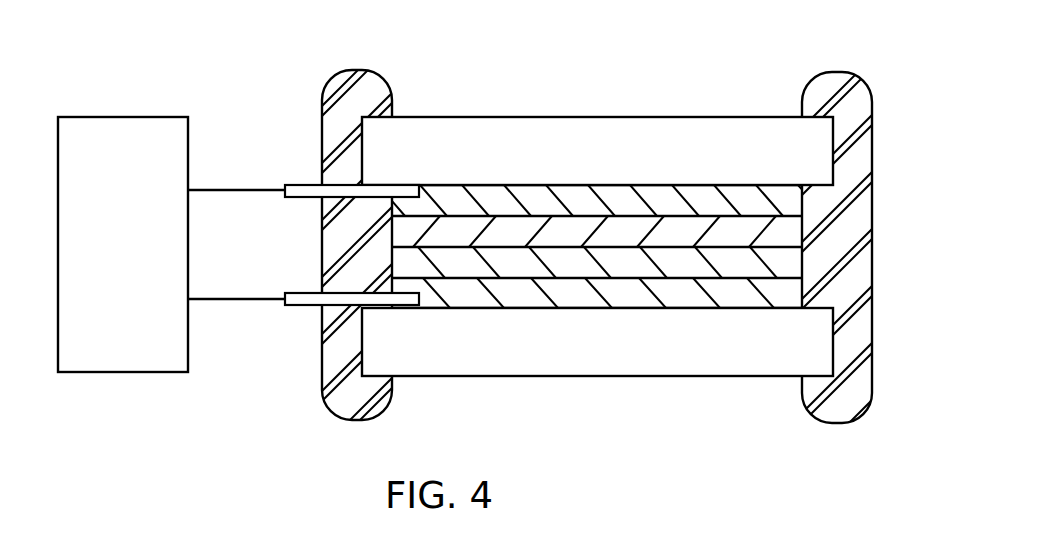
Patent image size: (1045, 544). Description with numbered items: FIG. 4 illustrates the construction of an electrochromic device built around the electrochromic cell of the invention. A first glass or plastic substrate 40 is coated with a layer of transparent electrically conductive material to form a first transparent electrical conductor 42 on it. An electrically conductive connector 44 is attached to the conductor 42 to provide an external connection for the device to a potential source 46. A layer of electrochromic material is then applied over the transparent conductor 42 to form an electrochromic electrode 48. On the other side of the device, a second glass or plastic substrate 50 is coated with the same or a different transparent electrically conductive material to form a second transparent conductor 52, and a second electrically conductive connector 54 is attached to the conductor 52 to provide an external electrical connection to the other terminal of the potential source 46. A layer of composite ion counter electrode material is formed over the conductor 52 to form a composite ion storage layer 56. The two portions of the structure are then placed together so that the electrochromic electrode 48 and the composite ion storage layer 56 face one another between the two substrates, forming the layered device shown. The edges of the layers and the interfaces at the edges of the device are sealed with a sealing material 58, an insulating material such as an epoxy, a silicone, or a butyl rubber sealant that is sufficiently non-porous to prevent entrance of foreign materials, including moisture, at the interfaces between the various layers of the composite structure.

The first glass or plastic substrate 40 is at (455, 118).
The first transparent electrical conductor 42 is at (497, 195).
The electrically conductive connector 44 is at (297, 184).
The potential source 46 is at (130, 117).
The electrochromic electrode 48 is at (585, 230).
The second glass or plastic substrate 50 is at (431, 378).
The second transparent conductor 52 is at (553, 297).
The second electrically conductive connector 54 is at (306, 307).
The composite ion storage layer 56 is at (640, 260).
The sealing material 58 is at (336, 253).